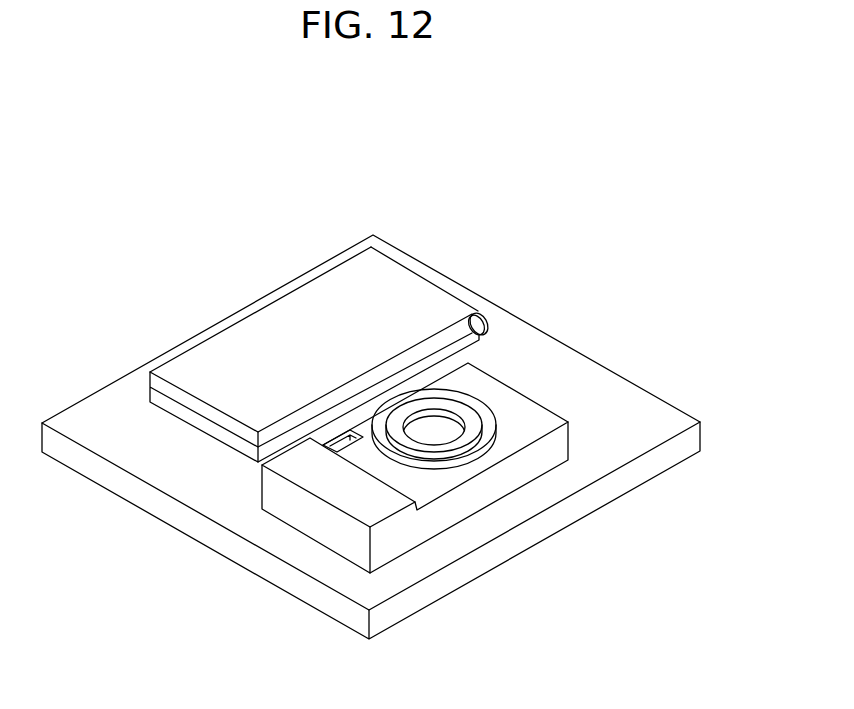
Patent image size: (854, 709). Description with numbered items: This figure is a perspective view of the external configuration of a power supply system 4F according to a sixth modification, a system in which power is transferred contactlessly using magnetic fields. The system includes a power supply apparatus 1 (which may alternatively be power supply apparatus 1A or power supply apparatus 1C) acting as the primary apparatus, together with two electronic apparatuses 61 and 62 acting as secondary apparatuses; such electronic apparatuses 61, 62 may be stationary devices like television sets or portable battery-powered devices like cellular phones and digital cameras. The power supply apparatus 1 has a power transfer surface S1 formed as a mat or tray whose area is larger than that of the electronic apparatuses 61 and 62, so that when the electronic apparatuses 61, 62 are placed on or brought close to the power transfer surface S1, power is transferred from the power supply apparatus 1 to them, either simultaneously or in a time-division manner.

The power supply apparatus 1 is at (375, 437).
The power supply apparatus 1A is at (371, 437).
The power supply apparatus 1C is at (371, 437).
The power transfer surface S1 is at (198, 486).
The power supply system 4F is at (445, 341).
The electronic apparatus 61 is at (406, 280).
The electronic apparatus 62 is at (498, 398).